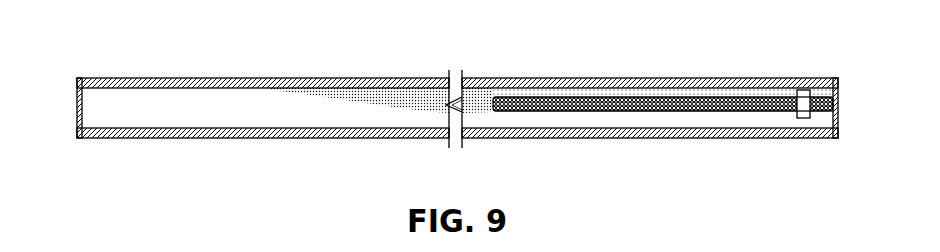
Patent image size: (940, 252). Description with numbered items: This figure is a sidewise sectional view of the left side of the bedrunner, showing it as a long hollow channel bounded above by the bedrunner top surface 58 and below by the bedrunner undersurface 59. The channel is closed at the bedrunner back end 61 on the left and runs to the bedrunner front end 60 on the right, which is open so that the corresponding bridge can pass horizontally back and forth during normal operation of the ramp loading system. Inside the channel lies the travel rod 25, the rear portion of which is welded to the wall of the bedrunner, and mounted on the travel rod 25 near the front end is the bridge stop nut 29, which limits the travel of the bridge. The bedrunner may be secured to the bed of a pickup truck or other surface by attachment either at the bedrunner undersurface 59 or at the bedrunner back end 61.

The bedrunner top surface 58 is at (232, 79).
The bedrunner undersurface 59 is at (688, 138).
The bedrunner back end 61 is at (76, 113).
The bedrunner front end 60 is at (838, 118).
The travel rod 25 is at (607, 113).
The bridge stop nut 29 is at (806, 90).